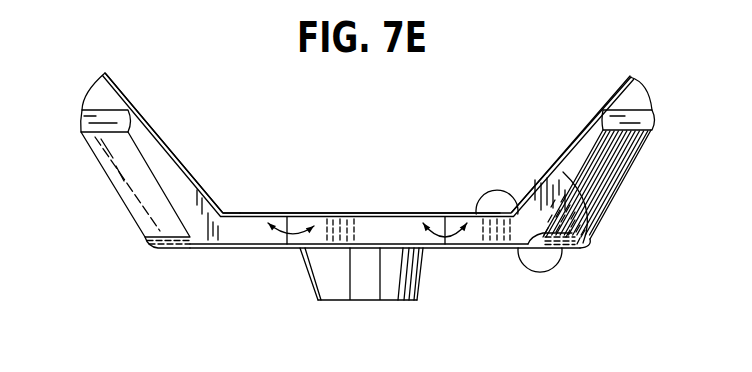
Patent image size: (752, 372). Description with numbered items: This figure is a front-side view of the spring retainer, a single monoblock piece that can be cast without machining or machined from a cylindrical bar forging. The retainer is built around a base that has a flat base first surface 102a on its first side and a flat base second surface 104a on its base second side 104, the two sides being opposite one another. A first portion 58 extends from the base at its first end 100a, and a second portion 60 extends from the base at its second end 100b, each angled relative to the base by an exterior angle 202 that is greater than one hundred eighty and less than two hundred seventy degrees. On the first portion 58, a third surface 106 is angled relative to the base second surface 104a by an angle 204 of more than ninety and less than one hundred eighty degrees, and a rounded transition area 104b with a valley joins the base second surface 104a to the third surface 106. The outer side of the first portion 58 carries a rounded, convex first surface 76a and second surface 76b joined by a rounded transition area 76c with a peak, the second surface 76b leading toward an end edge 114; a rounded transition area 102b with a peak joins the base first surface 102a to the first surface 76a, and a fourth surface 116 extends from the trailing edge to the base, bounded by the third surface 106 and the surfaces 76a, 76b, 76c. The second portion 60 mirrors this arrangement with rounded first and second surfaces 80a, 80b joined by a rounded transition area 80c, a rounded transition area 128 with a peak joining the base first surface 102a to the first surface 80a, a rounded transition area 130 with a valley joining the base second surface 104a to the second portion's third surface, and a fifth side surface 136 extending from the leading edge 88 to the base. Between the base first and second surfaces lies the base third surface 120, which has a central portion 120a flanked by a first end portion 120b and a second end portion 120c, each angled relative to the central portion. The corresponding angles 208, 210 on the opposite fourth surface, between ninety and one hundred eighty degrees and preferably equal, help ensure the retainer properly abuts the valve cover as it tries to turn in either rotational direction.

The first portion 58 is at (365, 184).
The second portion 60 is at (122, 162).
The first surface of first side 76a is at (630, 157).
The second surface of first side 76b is at (635, 100).
The transition area 76c is at (638, 120).
The first surface of second portion 80a is at (122, 183).
The second surface of second portion 80b is at (97, 97).
The transition area 80c is at (82, 127).
The leading edge 88 is at (133, 110).
The first end of base 100a is at (481, 210).
The second end of base 100b is at (230, 205).
The base first surface 102a is at (490, 253).
The rounded transition area 102b is at (582, 250).
The base second side 104 is at (422, 209).
The base second surface 104a is at (363, 212).
The rounded transition area 104b is at (522, 200).
The third surface 106 is at (580, 130).
The end edge 114 is at (630, 77).
The fourth surface 116 is at (572, 240).
The base third surface 120 is at (306, 285).
The central portion 120a is at (364, 249).
The first end portion 120b is at (467, 237).
The second end portion 120c is at (253, 227).
The rounded transition area 128 is at (173, 252).
The rounded transition area 130 is at (227, 211).
The fifth side surface 136 is at (173, 170).
The exterior angle 202 is at (547, 268).
The angle 204 is at (507, 193).
The angle 208 is at (433, 249).
The angle 210 is at (282, 230).